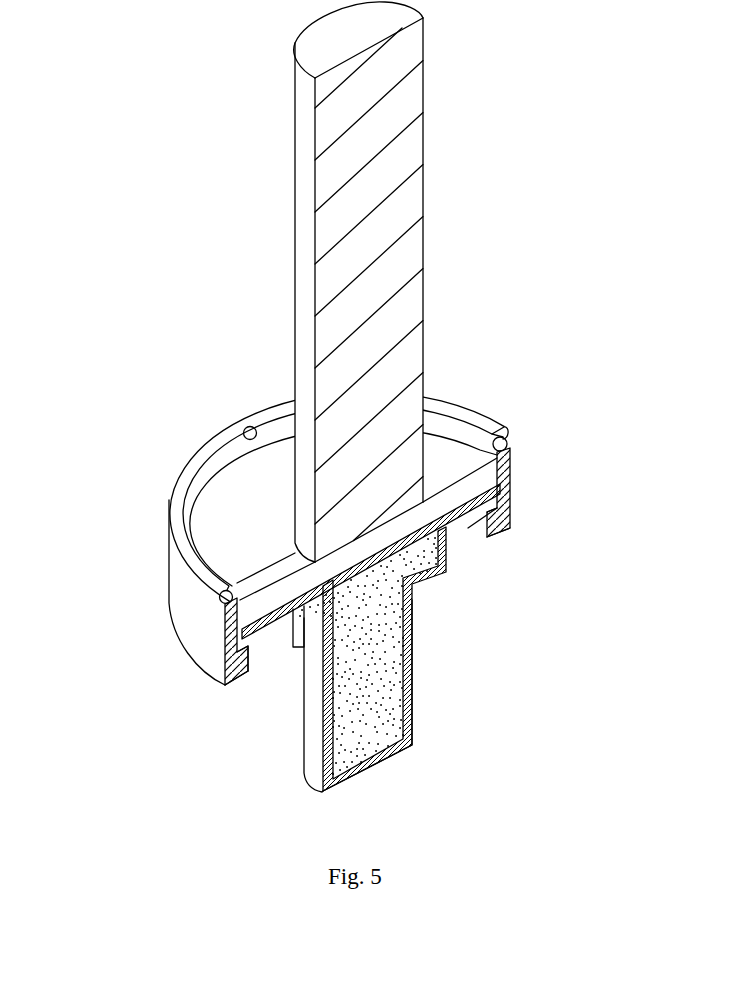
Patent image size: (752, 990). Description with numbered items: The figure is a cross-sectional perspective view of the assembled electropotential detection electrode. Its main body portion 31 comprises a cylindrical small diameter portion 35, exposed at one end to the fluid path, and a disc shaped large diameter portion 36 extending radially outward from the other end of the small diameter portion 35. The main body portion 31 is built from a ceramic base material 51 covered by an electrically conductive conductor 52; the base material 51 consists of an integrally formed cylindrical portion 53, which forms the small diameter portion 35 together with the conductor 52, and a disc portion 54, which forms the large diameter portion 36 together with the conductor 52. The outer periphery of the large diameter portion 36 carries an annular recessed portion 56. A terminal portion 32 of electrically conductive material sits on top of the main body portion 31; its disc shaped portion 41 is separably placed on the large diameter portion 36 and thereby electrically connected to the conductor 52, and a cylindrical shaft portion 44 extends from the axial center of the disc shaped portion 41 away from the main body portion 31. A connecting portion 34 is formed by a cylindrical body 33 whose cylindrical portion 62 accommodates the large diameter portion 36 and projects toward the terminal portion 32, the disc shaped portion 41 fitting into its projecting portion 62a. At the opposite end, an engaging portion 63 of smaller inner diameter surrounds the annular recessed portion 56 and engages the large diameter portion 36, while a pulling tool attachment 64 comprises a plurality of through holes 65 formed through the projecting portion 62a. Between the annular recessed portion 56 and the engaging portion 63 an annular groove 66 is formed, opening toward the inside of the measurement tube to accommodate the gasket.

The main body portion 31 is at (359, 662).
The terminal portion 32 is at (280, 282).
The cylindrical body 33 is at (169, 528).
The connecting portion 34 is at (158, 557).
The small diameter portion 35 is at (310, 749).
The large diameter portion 36 is at (227, 640).
The disc shaped portion 41 is at (240, 512).
The shaft portion 44 is at (312, 194).
The base material 51 is at (359, 664).
The conductor 52 is at (410, 729).
The cylindrical portion 53 is at (378, 692).
The disc portion 54 is at (355, 598).
The annular recessed portion 56 is at (283, 642).
The cylindrical portion 62 is at (514, 490).
The projecting portion 62a is at (462, 432).
The engaging portion 63 is at (514, 528).
The pulling tool attachment 64 is at (212, 613).
The through holes 65 is at (247, 427).
The annular groove 66 is at (483, 537).